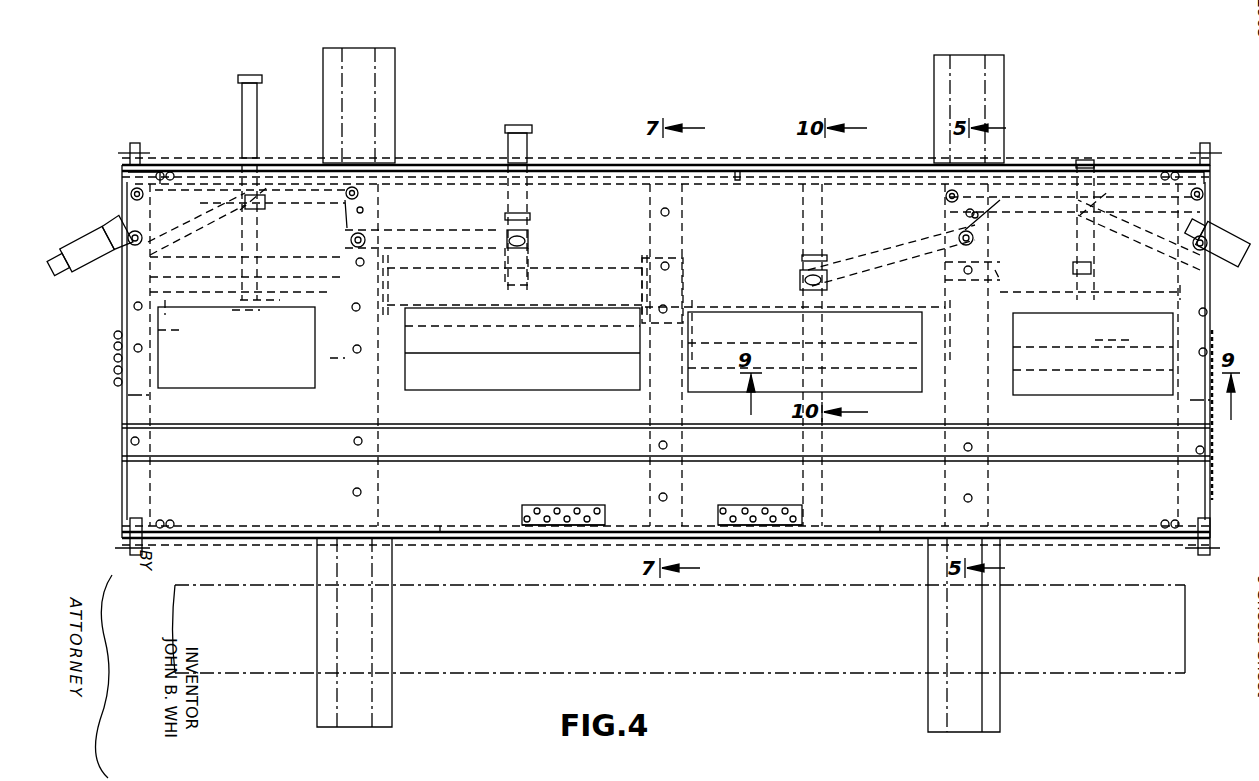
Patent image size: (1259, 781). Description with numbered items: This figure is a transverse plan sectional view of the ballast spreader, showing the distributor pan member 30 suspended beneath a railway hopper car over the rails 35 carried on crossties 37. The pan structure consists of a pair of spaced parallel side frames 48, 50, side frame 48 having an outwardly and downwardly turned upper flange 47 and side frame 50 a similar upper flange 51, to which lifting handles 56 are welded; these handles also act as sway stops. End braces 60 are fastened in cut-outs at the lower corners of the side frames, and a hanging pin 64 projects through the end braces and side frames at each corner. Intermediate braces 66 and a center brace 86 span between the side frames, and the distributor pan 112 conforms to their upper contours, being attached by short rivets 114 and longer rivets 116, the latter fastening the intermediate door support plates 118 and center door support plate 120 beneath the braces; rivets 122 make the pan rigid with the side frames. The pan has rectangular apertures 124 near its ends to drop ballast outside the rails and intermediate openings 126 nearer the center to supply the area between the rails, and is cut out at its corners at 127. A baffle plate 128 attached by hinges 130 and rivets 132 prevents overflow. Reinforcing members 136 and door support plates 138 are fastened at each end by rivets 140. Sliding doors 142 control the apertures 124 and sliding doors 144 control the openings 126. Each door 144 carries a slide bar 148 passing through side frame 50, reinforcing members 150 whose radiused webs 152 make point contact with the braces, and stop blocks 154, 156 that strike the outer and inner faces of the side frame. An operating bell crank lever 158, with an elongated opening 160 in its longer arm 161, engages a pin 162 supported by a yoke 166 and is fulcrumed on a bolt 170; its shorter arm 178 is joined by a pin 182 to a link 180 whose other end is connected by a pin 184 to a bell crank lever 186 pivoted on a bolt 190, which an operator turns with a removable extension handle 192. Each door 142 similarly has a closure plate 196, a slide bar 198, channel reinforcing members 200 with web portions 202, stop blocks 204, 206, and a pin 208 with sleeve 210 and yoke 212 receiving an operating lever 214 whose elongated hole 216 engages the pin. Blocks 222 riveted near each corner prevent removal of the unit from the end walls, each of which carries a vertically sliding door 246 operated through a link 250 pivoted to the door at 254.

The distributor pan member 30 is at (762, 553).
The rails 35 is at (390, 680).
The crossties 37 is at (822, 660).
The upper flange 47 is at (500, 545).
The side frame 48 is at (468, 535).
The side frame 50 is at (722, 170).
The upper flange 51 is at (718, 163).
The lifting handles 56 is at (425, 163).
The end braces 60 is at (140, 483).
The hanging pin 64 is at (130, 148).
The intermediate braces 66 is at (335, 520).
The center brace 86 is at (680, 500).
The distributor pan 112 is at (160, 418).
The short rivets 114 is at (140, 441).
The longer rivets 116 is at (353, 349).
The intermediate door support plates 118 is at (330, 358).
The center door support plate 120 is at (682, 248).
The rivets 122 is at (445, 528).
The rectangular apertures 124 is at (225, 385).
The intermediate openings 126 is at (505, 380).
The cut-outs 127 is at (1195, 518).
The baffle plate 128 is at (593, 538).
The hinges 130 is at (525, 508).
The rivets 132 is at (597, 509).
The reinforcing members 136 is at (145, 392).
The door support plates 138 is at (165, 292).
The rivets 140 is at (125, 300).
The sliding doors 142 is at (223, 313).
The sliding doors 144 is at (556, 400).
The slide bar 148 is at (530, 190).
The reinforcing members 150 is at (440, 300).
The webs 152 is at (385, 288).
The stop block 154 is at (530, 128).
The stop block 156 is at (530, 216).
The operating bell crank lever 158 is at (437, 222).
The elongated opening 160 is at (528, 238).
The longer arm 161 is at (492, 233).
The pin 162 is at (528, 242).
The yoke 166 is at (527, 270).
The bolt 170 is at (350, 241).
The shorter arm 178 is at (375, 222).
The link 180 is at (118, 178).
The pin 182 is at (358, 193).
The pin 184 is at (125, 193).
The bell crank lever 186 is at (115, 225).
The bolt 190 is at (142, 240).
The removable extension handle 192 is at (78, 255).
The closure plate 196 is at (312, 222).
The slide bar 198 is at (242, 100).
The channel reinforcing members 200 is at (243, 327).
The web portions 202 is at (300, 293).
The stop block 204 is at (258, 78).
The stop block 206 is at (243, 152).
The pin 208 is at (265, 160).
The sleeve 210 is at (1105, 268).
The yoke 212 is at (258, 226).
The operating lever 214 is at (232, 228).
The elongated hole 216 is at (275, 165).
The blocks 222 is at (165, 163).
The door 246 is at (120, 388).
The link 250 is at (112, 368).
The pivot 254 is at (113, 352).